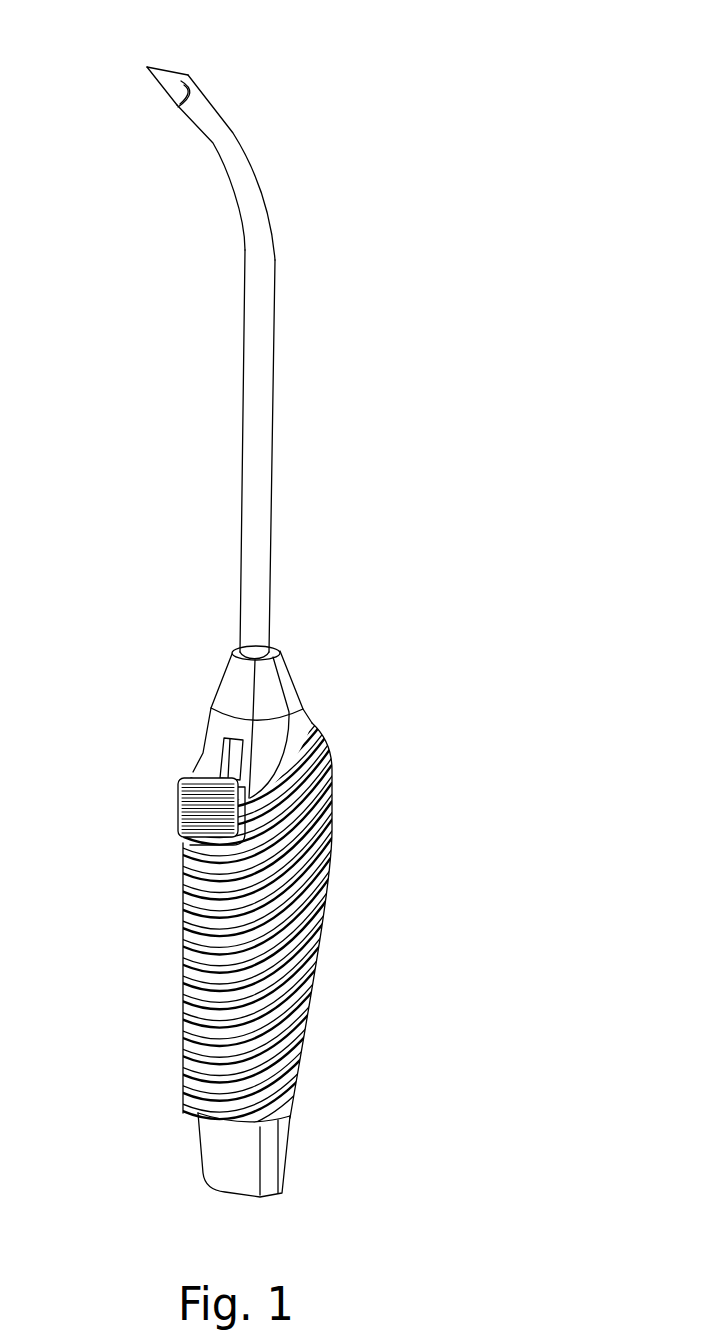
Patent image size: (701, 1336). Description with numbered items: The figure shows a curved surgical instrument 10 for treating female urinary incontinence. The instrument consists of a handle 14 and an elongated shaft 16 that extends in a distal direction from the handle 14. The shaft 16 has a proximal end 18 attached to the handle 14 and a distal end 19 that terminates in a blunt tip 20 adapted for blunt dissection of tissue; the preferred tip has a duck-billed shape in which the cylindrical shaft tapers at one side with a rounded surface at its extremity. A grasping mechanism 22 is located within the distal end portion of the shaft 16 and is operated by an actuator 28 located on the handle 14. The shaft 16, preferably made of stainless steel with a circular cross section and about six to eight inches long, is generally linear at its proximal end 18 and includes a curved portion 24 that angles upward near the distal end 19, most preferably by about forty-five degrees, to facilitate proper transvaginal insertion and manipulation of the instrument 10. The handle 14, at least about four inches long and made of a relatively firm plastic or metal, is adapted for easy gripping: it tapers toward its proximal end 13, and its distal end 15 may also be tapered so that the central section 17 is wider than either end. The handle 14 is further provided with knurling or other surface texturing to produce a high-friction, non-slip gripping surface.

The curved surgical instrument 10 is at (150, 453).
The proximal end 13 is at (290, 1128).
The handle 14 is at (296, 917).
The distal end 15 is at (303, 707).
The shaft 16 is at (276, 363).
The central section 17 is at (323, 948).
The proximal end 18 is at (282, 643).
The distal end 19 is at (166, 76).
The blunt tip 20 is at (172, 70).
The grasping mechanism 22 is at (178, 105).
The curved portion 24 is at (267, 203).
The actuator 28 is at (178, 793).